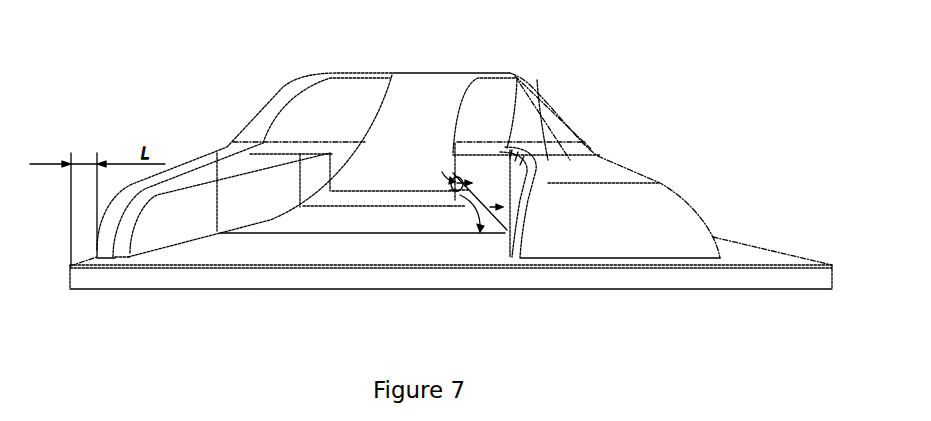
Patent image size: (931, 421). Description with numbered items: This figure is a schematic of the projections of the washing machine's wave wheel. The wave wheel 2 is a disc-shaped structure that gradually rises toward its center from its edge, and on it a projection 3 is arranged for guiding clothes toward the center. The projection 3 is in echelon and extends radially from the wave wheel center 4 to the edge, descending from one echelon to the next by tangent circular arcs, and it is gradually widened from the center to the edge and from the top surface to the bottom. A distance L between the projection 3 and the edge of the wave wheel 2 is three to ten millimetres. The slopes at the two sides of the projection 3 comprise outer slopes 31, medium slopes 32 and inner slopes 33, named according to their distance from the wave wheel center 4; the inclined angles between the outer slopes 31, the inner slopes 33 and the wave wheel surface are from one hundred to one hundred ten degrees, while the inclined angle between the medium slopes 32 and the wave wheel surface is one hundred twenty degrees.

The wave wheel 2 is at (287, 265).
The projection 3 is at (408, 217).
The outer slopes 31 is at (500, 225).
The medium slopes 32 is at (463, 183).
The inner slopes 33 is at (458, 187).
The wave wheel center 4 is at (437, 73).